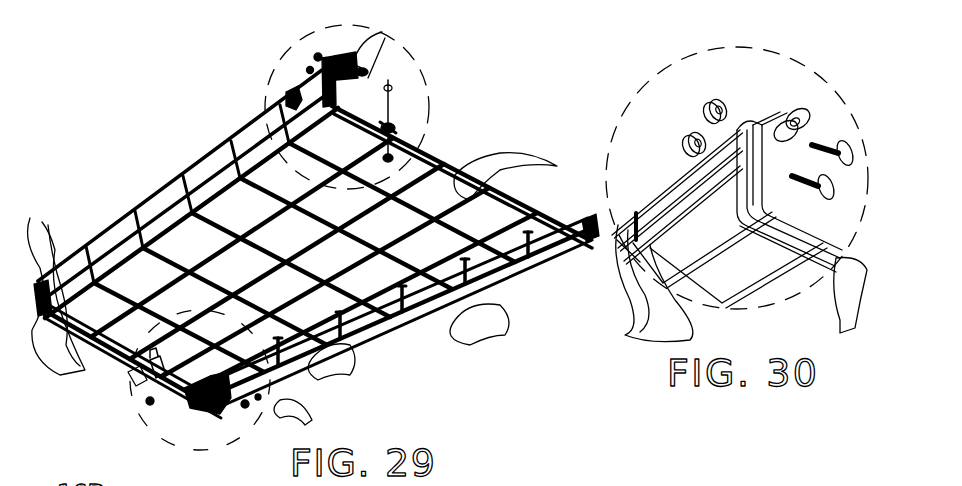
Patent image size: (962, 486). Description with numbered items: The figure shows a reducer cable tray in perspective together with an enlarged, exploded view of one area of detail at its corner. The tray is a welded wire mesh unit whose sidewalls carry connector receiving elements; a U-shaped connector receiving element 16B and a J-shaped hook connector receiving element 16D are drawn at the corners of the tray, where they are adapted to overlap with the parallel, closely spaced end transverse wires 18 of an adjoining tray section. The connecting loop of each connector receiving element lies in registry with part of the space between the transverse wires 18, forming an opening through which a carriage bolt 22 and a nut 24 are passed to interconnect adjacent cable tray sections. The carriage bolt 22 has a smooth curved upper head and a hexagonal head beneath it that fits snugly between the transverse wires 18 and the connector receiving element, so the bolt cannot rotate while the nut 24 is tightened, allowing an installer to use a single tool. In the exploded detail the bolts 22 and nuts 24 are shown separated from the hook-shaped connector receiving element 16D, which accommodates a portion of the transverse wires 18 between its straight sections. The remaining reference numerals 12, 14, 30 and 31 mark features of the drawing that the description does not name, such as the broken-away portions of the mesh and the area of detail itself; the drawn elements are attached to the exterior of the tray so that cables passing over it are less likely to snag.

In FIG. 29, the cable tray 12 is at (548, 166).
In FIG. 30, the cable tray 12 is at (728, 197).
In FIG. 29, the retaining clips 14 is at (345, 378).
In FIG. 30, the retaining clips 14 is at (692, 472).
In FIG. 29, the connector receiving element 16B is at (398, 125).
In FIG. 29, the connector receiving element 16D is at (270, 88).
In FIG. 29, the transverse wires 18 is at (56, 287).
In FIG. 30, the transverse wires 18 is at (860, 306).
In FIG. 29, the carriage bolt 22 is at (113, 393).
In FIG. 30, the carriage bolt 22 is at (833, 180).
In FIG. 29, the nut 24 is at (317, 57).
In FIG. 30, the nut 24 is at (687, 138).
In FIG. 29, the detail region 30 is at (424, 82).
In FIG. 29, the washer 31 is at (160, 422).